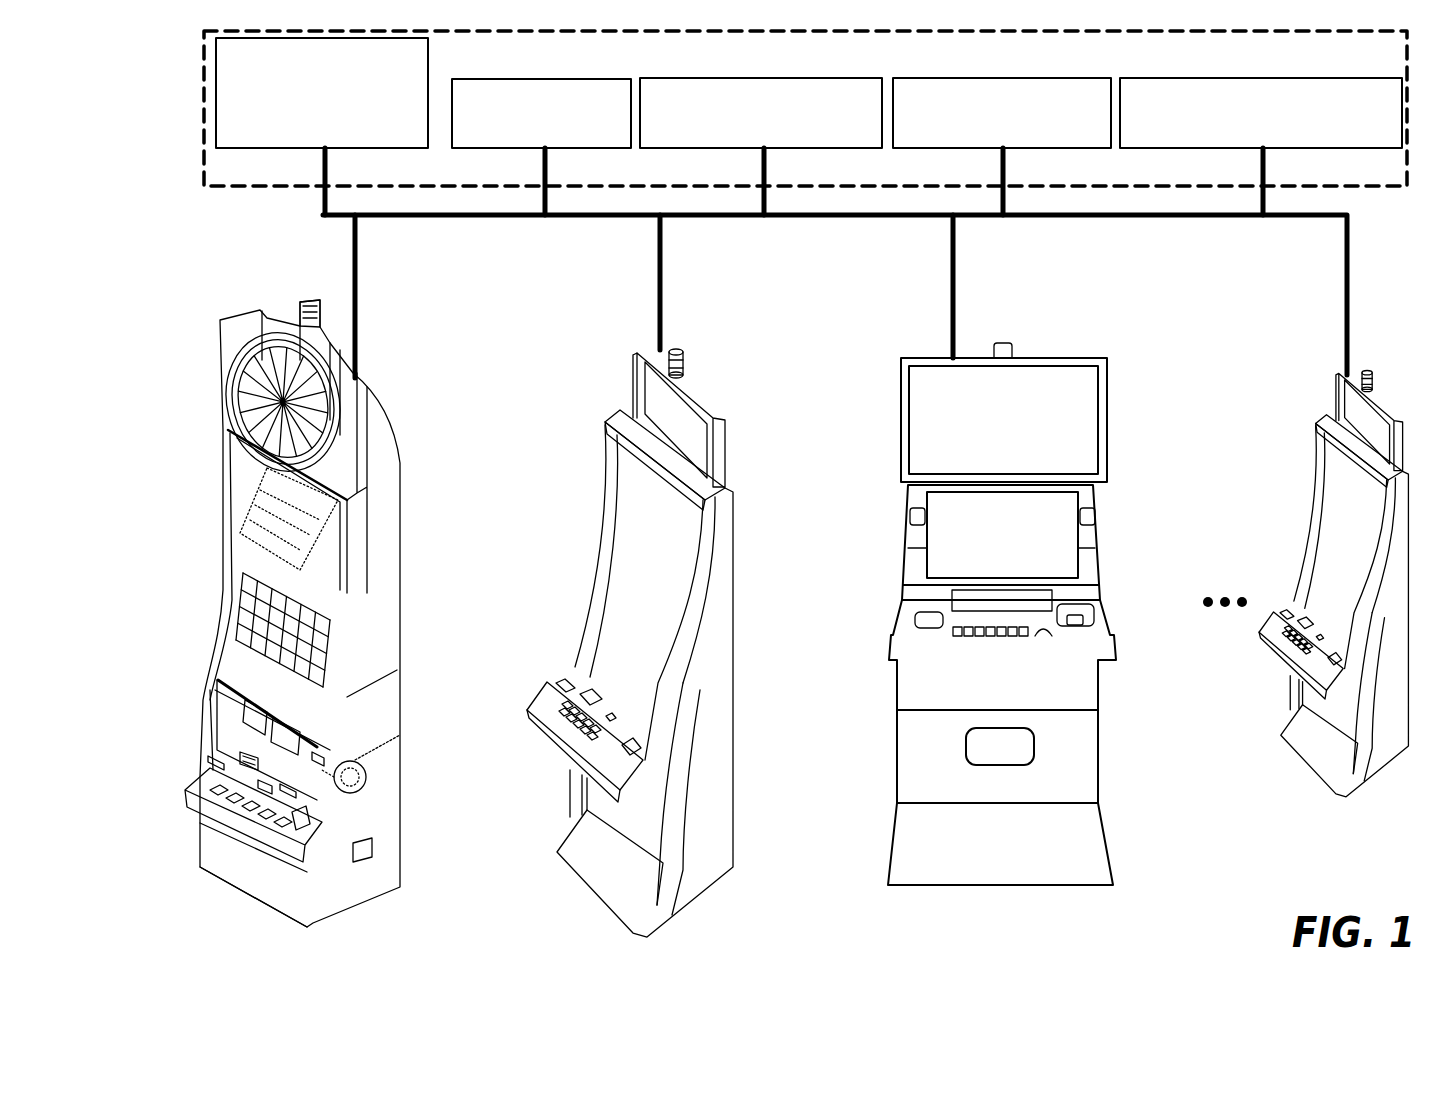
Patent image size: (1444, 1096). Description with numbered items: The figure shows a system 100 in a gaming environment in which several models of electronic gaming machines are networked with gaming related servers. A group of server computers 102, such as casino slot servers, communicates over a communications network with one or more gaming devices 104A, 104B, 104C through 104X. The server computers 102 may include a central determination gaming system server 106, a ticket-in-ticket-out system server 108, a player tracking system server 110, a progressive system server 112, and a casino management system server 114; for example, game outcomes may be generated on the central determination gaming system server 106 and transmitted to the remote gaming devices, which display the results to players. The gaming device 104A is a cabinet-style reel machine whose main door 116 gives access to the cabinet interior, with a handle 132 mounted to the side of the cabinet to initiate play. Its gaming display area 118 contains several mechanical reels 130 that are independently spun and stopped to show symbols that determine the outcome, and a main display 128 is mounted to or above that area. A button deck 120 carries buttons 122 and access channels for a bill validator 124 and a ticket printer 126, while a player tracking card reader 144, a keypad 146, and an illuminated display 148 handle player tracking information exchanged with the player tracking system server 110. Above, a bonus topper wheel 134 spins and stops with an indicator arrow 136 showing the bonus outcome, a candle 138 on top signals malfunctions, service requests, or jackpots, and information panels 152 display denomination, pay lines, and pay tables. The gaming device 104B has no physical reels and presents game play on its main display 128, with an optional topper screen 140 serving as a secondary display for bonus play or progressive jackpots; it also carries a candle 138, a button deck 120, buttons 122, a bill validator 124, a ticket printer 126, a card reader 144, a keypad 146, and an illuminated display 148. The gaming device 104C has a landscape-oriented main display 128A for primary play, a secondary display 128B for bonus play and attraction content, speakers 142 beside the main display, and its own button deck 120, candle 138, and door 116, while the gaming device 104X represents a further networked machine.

The system 100 is at (188, 94).
The server computers 102 is at (1360, 188).
The gaming device 104A is at (207, 328).
The gaming device 104B is at (578, 410).
The gaming device 104C is at (890, 323).
The gaming device 104X is at (1305, 376).
The central determination gaming system server 106 is at (385, 149).
The ticket-in-ticket-out (TITO) system server 108 is at (583, 149).
The player tracking system server 110 is at (806, 149).
The progressive system server 112 is at (1065, 149).
The casino management system server 114 is at (1310, 149).
The main door 116 is at (207, 835).
The gaming display area 118 is at (210, 708).
The button deck 120 is at (207, 807).
The buttons 122 is at (223, 779).
The bill validator 124 is at (300, 820).
The ticket printer 126 is at (215, 762).
The main display 128 is at (340, 540).
The main display 128A is at (1080, 538).
The secondary display 128B is at (1100, 435).
The mechanical reels 130 is at (210, 690).
The handle 132 is at (327, 760).
The bonus topper wheel 134 is at (320, 432).
The indicator arrow 136 is at (272, 340).
The candle 138 is at (310, 332).
The topper screen 140 is at (727, 437).
The speakers 142 is at (908, 512).
The player tracking card reader 144 is at (287, 790).
The keypad 146 is at (320, 757).
The illuminated display 148 is at (265, 786).
The information panels 152 is at (248, 758).